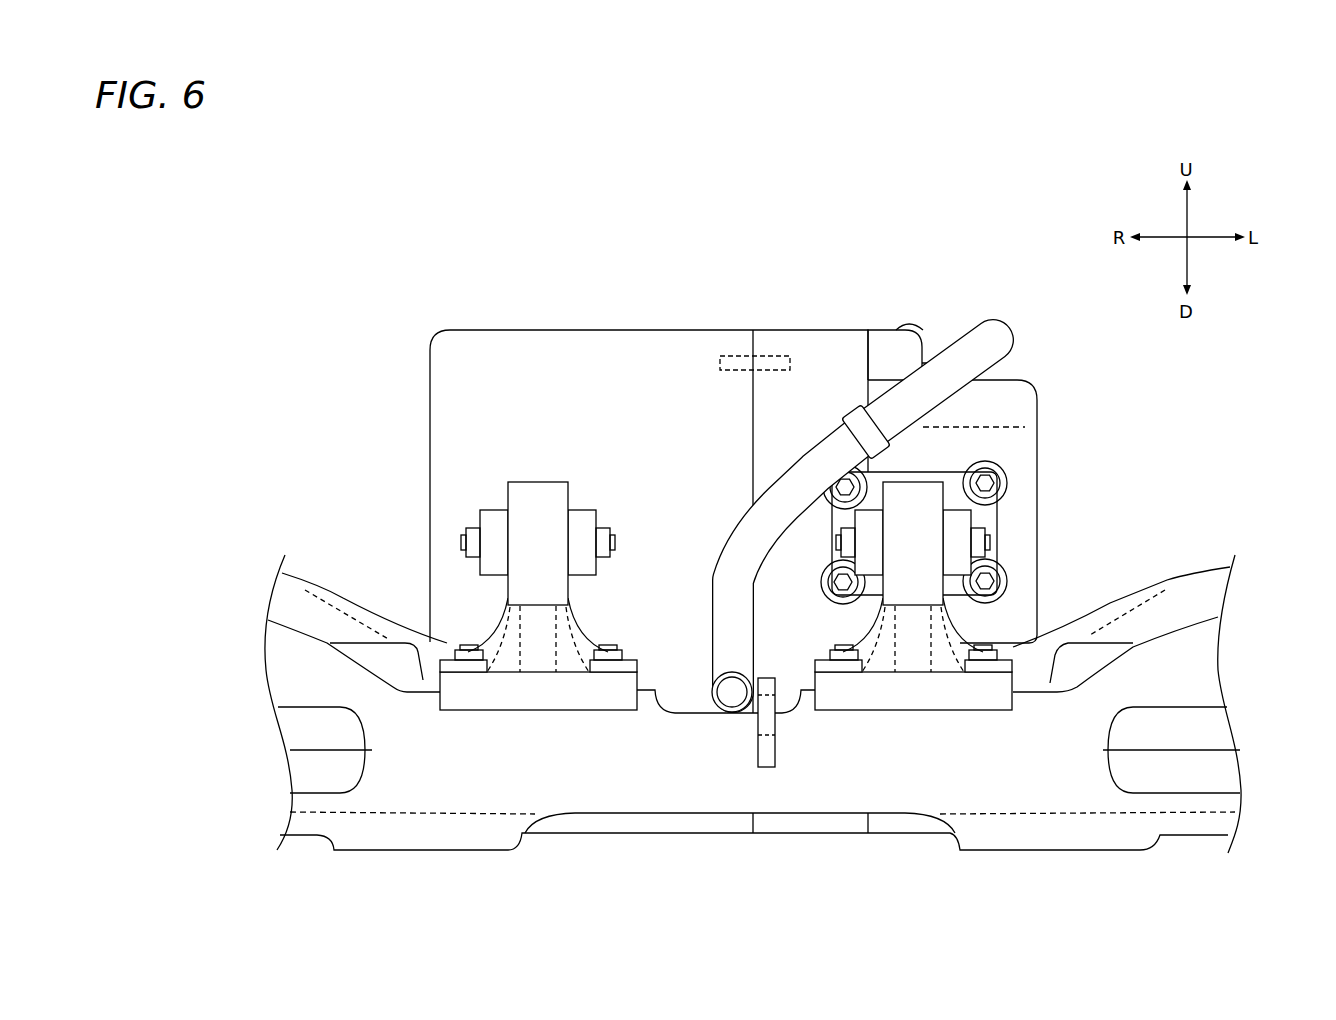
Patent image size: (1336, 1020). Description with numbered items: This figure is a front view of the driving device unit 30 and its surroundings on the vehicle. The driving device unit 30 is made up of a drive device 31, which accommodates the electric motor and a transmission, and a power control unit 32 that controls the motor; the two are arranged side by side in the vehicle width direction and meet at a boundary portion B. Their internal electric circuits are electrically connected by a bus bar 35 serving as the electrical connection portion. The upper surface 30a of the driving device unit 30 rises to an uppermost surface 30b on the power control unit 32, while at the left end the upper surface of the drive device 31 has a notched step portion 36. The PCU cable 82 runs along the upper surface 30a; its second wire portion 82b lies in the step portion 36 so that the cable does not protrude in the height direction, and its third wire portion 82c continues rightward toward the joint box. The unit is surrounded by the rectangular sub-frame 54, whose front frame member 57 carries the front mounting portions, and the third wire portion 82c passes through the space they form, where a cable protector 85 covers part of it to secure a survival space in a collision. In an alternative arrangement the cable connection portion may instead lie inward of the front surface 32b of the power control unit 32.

The driving device unit 30 is at (499, 313).
The upper surface 30a is at (778, 330).
The uppermost surface 30b is at (543, 330).
The drive device 31 is at (1040, 412).
The power control unit (PCU) 32 is at (430, 378).
The front surface 32b is at (587, 372).
The bus bar 35 is at (735, 356).
The step portion 36 is at (1007, 374).
The sub-frame 54 is at (1232, 624).
The front frame member 57 is at (1207, 665).
The PCU cable 82 is at (990, 322).
The second wire portion 82b is at (935, 330).
The third wire portion 82c is at (903, 385).
The cable protector 85 is at (776, 747).
The boundary portion B is at (750, 323).